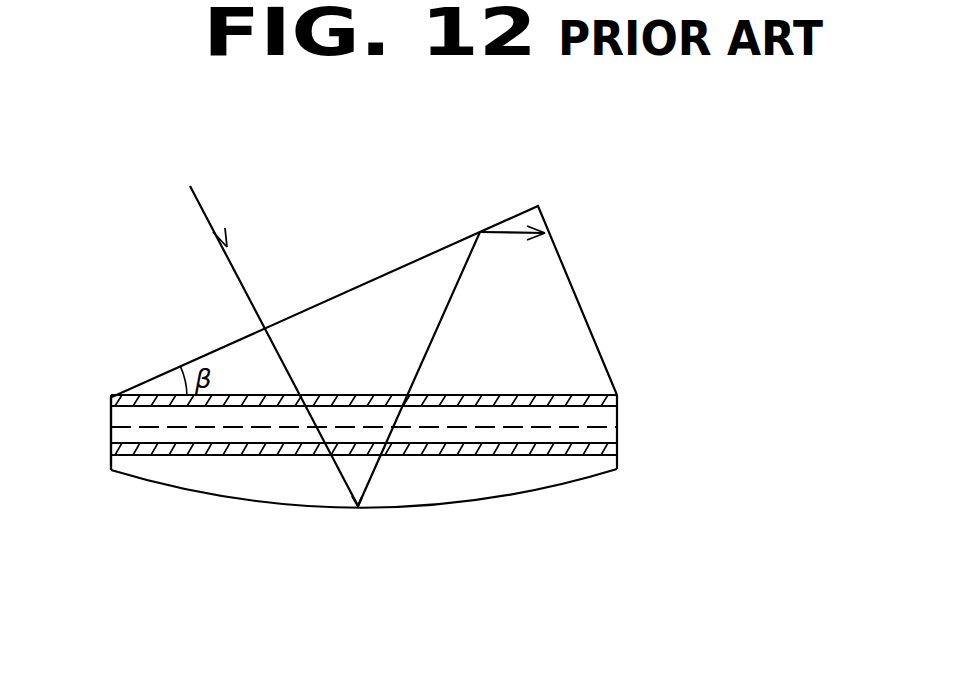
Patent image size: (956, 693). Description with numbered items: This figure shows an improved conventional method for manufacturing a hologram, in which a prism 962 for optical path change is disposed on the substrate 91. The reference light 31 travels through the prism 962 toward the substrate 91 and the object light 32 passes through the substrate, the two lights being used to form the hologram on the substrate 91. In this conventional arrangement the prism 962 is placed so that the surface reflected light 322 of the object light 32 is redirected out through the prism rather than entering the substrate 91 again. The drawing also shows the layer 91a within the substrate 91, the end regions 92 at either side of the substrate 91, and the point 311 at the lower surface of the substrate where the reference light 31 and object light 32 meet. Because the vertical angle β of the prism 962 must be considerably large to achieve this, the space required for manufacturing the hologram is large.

The reference light 31 is at (210, 210).
The focal point on lens surface 311 is at (343, 473).
The object light 32 is at (377, 465).
The surface reflected light 322 is at (515, 232).
The substrate 91 is at (610, 413).
The recording layer 91a is at (600, 428).
The end faces of substrate 92 is at (110, 398).
The prism 962 is at (552, 302).